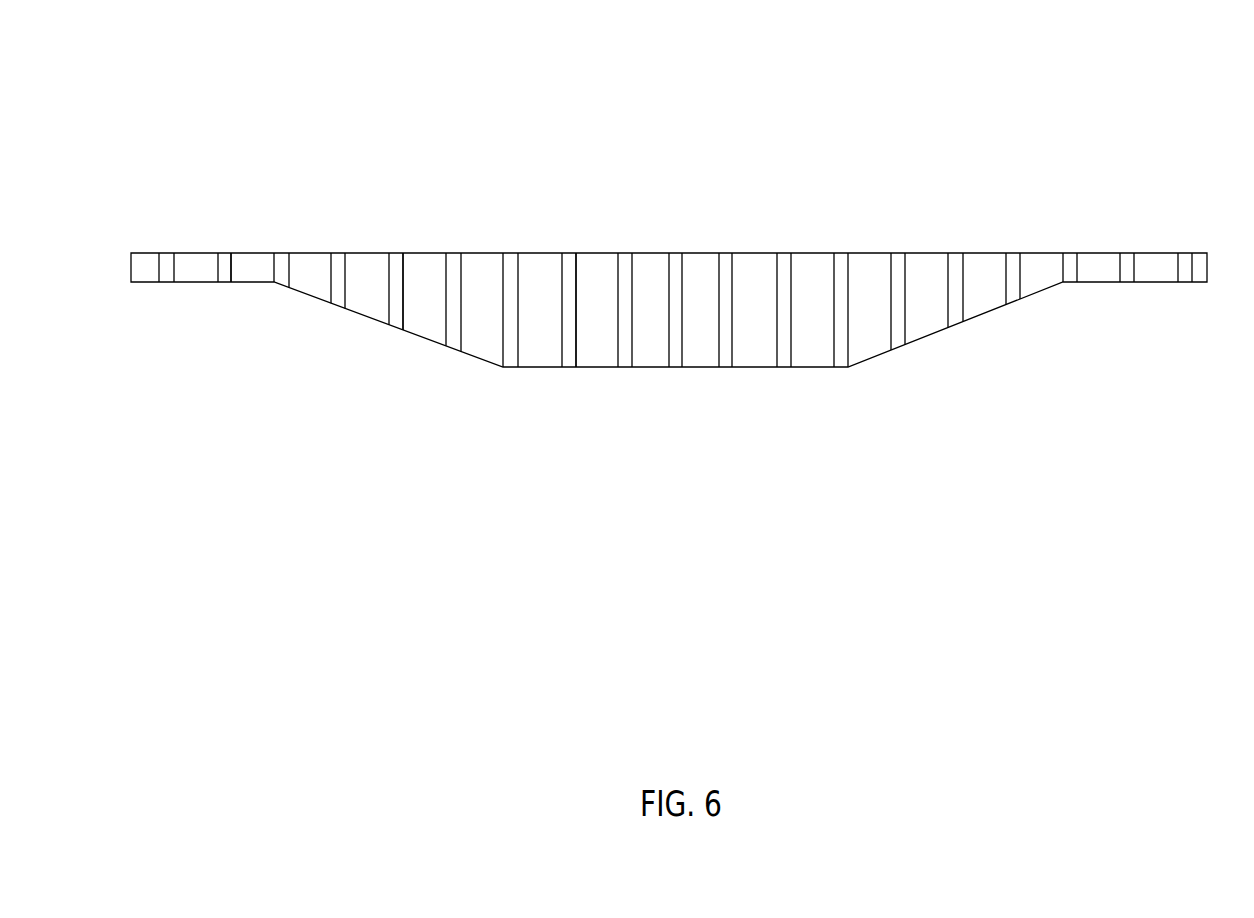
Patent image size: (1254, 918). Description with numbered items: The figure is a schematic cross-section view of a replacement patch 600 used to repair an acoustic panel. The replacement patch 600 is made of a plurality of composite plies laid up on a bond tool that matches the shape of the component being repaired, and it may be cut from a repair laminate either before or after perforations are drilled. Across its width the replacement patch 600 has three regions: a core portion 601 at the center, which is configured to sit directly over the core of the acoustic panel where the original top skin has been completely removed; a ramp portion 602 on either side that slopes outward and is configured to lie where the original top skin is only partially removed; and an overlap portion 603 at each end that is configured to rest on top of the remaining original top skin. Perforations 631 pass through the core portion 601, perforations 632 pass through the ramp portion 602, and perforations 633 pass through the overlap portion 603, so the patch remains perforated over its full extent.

The replacement patch 600 is at (1100, 145).
The core portion 601 is at (723, 443).
The ramp portion 602 is at (411, 397).
The overlap portion 603 is at (203, 338).
The perforations in the core portion 631 is at (578, 298).
The perforations in the ramp portion 632 is at (407, 282).
The perforations in the overlap portion 633 is at (231, 267).